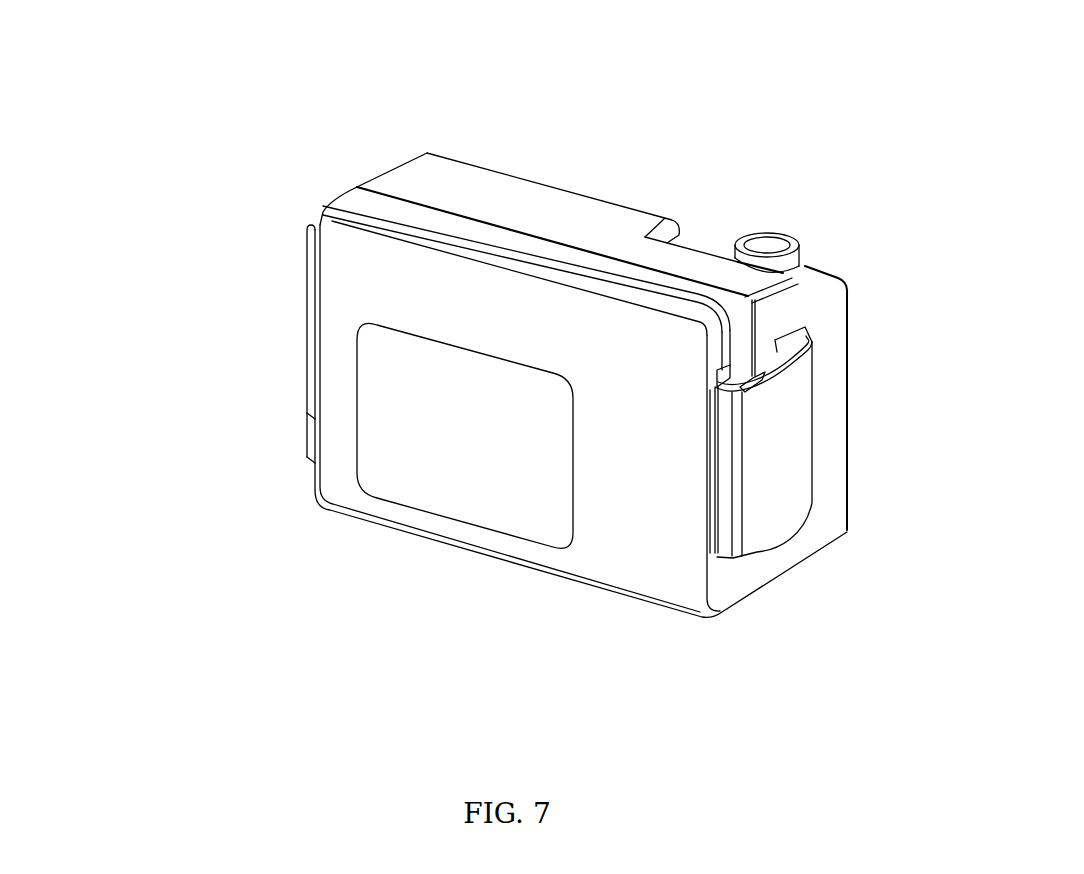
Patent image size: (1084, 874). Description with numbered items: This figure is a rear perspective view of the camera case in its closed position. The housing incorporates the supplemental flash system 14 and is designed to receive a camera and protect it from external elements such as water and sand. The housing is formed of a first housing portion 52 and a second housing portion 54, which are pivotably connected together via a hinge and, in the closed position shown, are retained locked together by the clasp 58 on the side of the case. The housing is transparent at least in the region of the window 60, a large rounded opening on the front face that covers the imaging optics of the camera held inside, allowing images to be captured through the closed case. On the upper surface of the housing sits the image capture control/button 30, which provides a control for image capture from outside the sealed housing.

The supplemental flash system 14 is at (212, 505).
The image capture control/button 30 is at (767, 243).
The first housing portion 52 is at (418, 177).
The second housing portion 54 is at (372, 201).
The clasp 58 is at (767, 515).
The window 60 is at (410, 470).